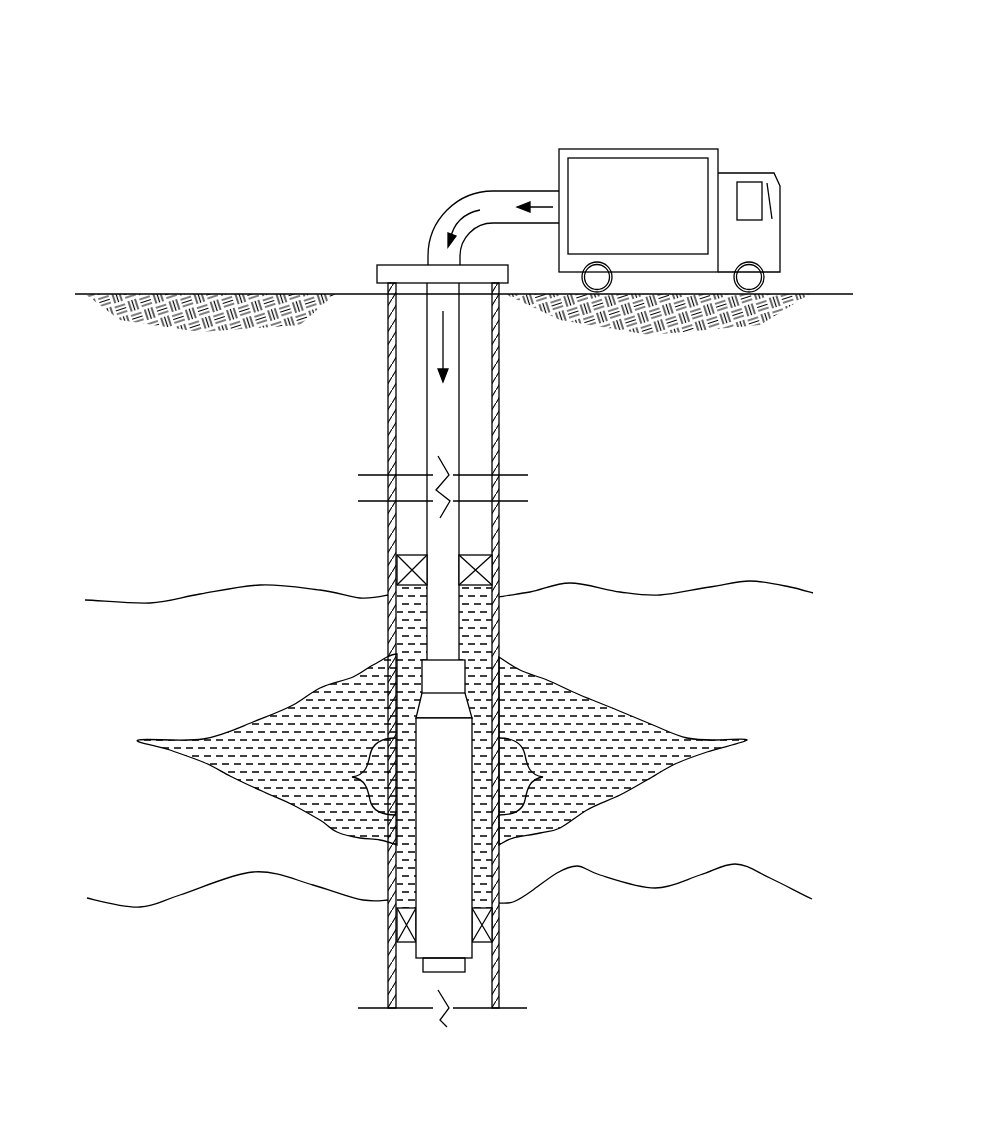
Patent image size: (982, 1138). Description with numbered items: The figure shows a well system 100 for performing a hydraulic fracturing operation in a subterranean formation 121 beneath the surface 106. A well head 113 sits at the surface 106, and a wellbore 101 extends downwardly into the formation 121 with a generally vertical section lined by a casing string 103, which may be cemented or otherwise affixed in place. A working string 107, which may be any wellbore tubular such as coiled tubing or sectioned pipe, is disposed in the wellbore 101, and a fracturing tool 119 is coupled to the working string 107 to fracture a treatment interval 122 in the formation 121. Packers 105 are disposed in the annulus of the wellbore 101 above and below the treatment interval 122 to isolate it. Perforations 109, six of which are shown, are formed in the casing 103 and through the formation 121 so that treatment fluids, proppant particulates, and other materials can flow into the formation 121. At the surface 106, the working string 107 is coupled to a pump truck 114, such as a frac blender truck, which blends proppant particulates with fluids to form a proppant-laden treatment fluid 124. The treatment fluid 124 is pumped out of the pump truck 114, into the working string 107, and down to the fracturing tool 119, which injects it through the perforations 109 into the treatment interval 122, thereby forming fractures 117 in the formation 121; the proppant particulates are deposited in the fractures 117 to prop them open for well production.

The well system 100 is at (478, 60).
The wellbore 101 is at (480, 388).
The casing string 103 is at (390, 449).
The packers 105 is at (397, 560).
The surface 106 is at (133, 293).
The working string 107 is at (427, 398).
The perforations 109 is at (352, 777).
The well head 113 is at (386, 265).
The pump truck 114 is at (619, 218).
The fractures 117 is at (258, 785).
The fracturing tool 119 is at (427, 840).
The subterranean formation 121 is at (728, 452).
The treatment interval 122 is at (190, 663).
The treatment fluid 124 is at (470, 202).